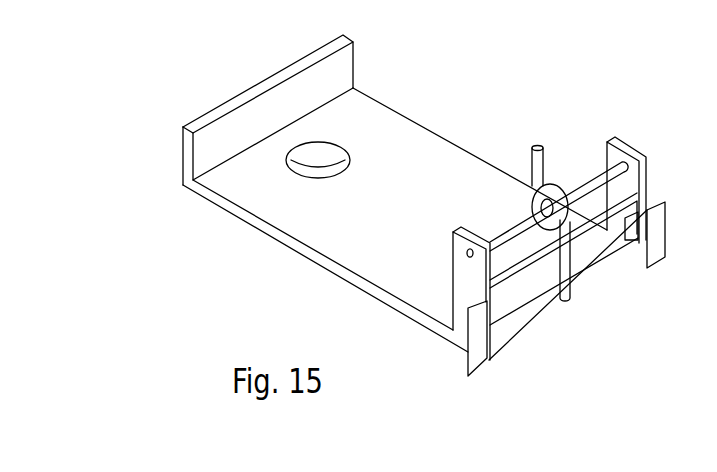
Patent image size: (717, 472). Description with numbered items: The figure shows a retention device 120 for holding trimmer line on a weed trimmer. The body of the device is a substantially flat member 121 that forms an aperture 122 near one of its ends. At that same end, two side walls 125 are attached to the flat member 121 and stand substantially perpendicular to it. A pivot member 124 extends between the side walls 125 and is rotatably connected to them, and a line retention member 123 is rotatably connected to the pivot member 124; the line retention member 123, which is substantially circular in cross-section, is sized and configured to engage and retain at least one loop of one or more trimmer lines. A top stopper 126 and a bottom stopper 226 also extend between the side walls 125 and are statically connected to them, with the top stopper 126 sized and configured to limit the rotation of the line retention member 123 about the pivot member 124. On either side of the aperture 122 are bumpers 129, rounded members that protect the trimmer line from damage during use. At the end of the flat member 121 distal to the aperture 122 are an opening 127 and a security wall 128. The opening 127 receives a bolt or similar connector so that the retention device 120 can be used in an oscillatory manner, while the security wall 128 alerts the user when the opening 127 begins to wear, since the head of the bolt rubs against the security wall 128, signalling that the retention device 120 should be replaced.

The retention device 120 is at (210, 66).
The flat member 121 is at (402, 135).
The aperture 122 is at (597, 252).
The line retention member 123 is at (535, 157).
The pivot member 124 is at (590, 185).
The side walls 125 is at (467, 268).
The top stopper 126 is at (633, 196).
The opening 127 is at (320, 167).
The security wall 128 is at (210, 152).
The bumpers 129 is at (475, 364).
The bottom stopper 226 is at (543, 307).